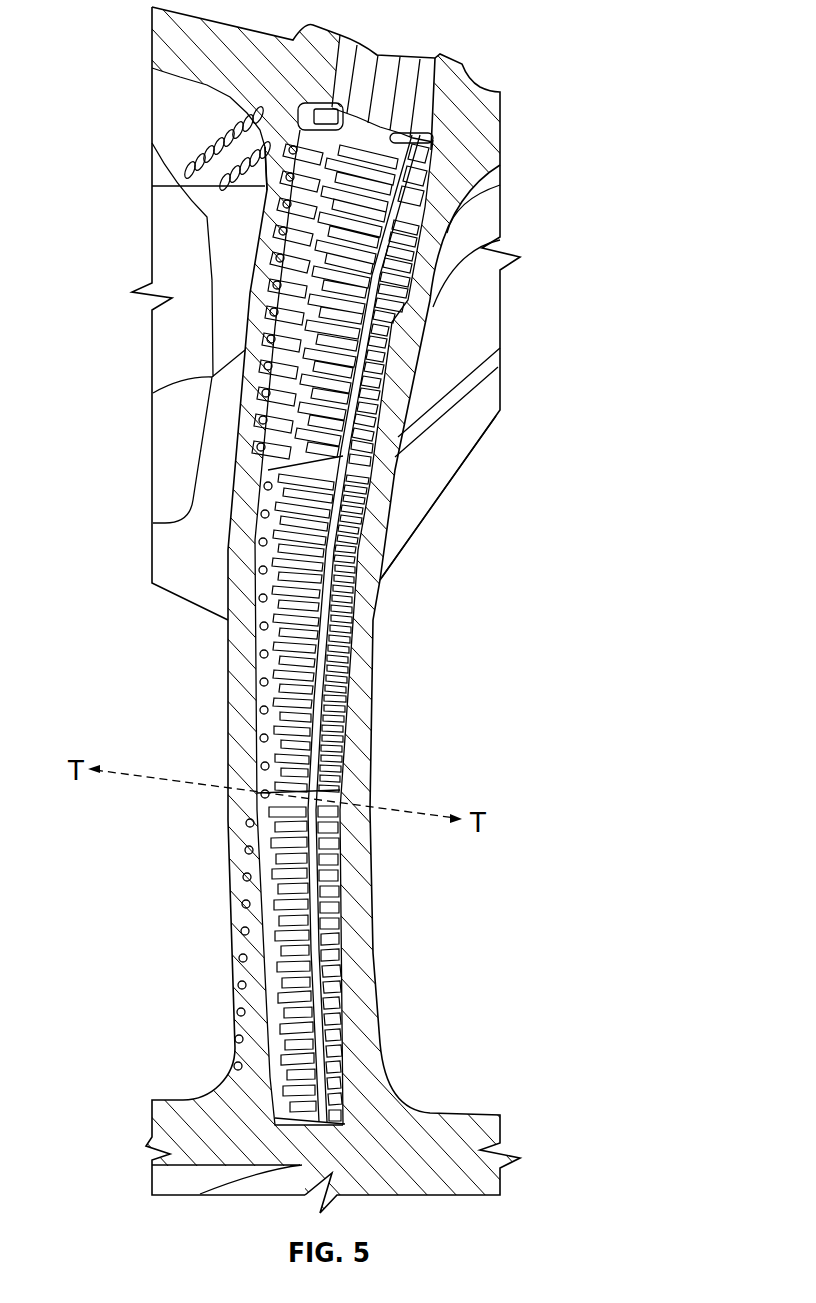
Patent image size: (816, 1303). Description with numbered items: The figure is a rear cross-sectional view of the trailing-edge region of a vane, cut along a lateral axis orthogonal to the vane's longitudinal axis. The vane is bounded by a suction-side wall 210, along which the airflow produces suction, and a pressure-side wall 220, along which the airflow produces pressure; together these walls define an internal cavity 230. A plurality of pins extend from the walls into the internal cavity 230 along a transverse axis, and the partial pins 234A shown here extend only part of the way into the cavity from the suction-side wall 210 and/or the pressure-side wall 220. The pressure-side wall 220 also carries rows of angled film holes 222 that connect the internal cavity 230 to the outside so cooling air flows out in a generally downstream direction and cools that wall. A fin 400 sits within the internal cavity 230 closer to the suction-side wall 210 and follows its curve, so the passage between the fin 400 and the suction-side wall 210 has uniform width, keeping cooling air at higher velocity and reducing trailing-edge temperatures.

The suction-side wall 210 is at (357, 737).
The pressure-side wall 220 is at (240, 722).
The film holes 222 is at (250, 822).
The internal cavity 230 is at (262, 638).
The partial pins 234A is at (298, 683).
The fin 400 is at (322, 604).